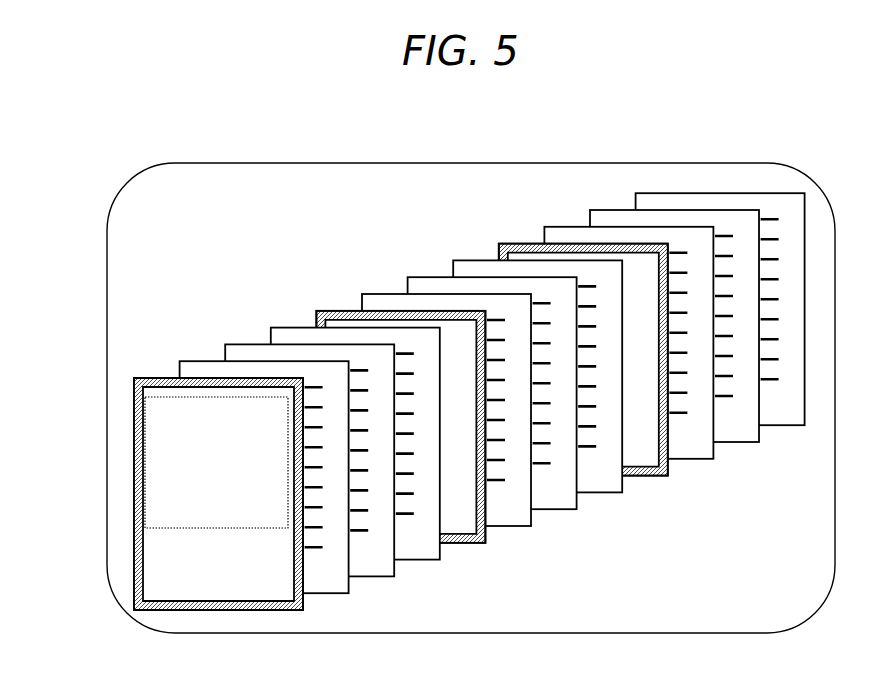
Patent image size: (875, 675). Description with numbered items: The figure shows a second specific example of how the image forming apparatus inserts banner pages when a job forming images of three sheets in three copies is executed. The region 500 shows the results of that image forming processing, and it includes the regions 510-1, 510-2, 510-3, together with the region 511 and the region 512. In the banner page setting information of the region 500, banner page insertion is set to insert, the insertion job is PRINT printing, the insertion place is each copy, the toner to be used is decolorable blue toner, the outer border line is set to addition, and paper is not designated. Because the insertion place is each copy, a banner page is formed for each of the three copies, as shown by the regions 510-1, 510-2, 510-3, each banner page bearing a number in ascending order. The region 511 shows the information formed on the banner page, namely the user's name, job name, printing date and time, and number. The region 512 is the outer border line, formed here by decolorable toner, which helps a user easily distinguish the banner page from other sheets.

The region 500 is at (803, 174).
The region 510-1 is at (246, 359).
The region 510-2 is at (326, 311).
The region 510-3 is at (515, 243).
The region 511 is at (150, 378).
The region 512 is at (139, 468).